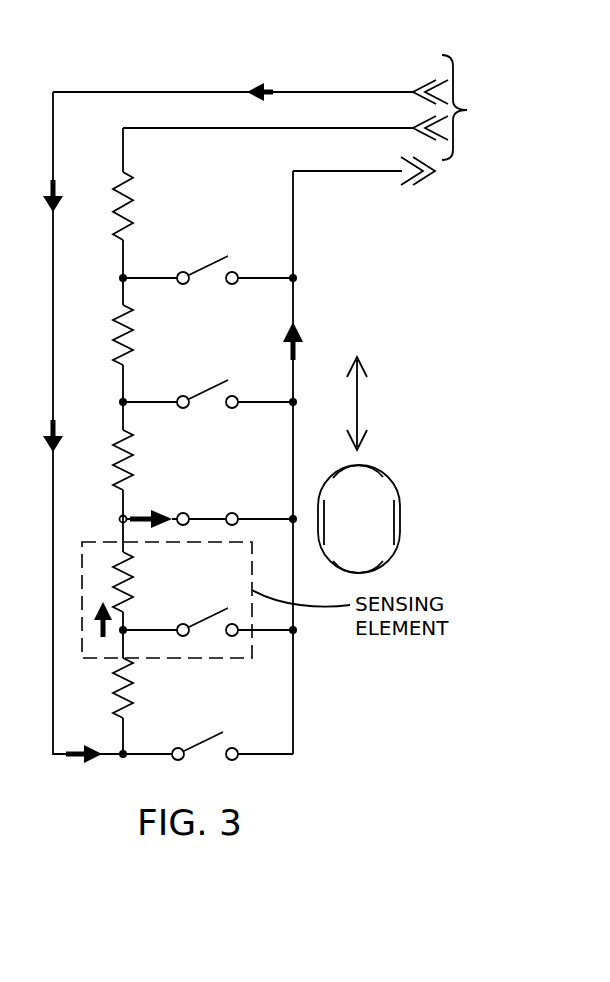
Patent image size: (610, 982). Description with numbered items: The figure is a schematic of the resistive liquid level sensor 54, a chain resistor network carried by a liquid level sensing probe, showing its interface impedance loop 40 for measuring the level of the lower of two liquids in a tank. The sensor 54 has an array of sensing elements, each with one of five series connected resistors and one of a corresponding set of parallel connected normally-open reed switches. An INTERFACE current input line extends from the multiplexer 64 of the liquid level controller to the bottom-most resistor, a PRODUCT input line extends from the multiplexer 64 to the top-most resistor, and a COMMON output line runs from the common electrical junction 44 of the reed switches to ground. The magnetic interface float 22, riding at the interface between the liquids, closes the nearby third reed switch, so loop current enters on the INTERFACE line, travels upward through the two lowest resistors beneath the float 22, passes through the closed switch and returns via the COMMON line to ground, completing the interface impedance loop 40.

The magnetic interface float 22 is at (395, 490).
The interface impedance loop 40 is at (330, 323).
The common electrical junction 44 is at (298, 274).
The resistive liquid level sensor 54 is at (279, 426).
The low impedance analog multiplexer 64 is at (474, 120).